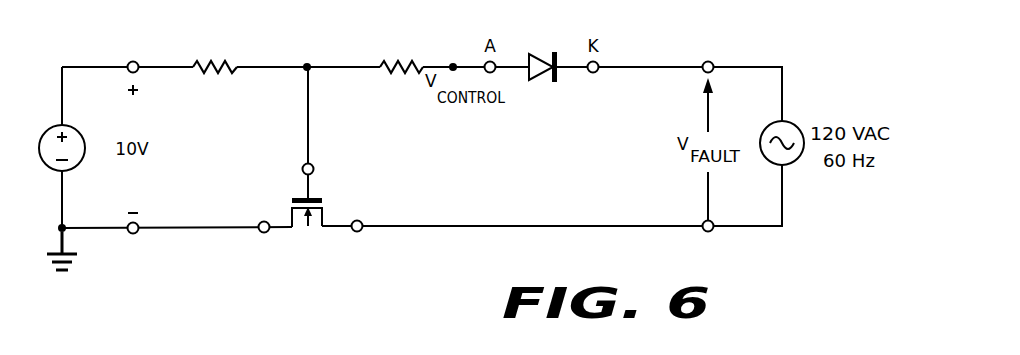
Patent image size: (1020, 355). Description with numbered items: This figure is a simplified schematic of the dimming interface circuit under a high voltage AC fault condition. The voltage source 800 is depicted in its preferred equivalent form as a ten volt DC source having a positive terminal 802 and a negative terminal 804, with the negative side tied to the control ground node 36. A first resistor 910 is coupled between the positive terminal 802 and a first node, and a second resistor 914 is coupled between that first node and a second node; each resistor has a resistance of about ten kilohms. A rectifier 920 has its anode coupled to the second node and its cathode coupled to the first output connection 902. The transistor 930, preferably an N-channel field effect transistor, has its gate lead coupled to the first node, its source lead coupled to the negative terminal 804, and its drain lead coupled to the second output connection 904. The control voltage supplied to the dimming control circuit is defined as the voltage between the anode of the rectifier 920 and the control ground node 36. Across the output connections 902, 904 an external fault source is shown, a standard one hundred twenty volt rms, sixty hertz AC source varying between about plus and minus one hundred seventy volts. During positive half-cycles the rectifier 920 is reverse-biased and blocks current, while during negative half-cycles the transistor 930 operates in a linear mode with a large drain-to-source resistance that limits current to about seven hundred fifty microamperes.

The voltage source 800 is at (51, 132).
The positive terminal 802 is at (133, 61).
The negative terminal 804 is at (133, 233).
The control ground node 36 is at (61, 246).
The first resistor 910 is at (217, 75).
The second resistor 914 is at (400, 75).
The rectifier 920 is at (534, 80).
The transistor 930 is at (308, 232).
The first output connection 902 is at (708, 61).
The second output connection 904 is at (708, 231).